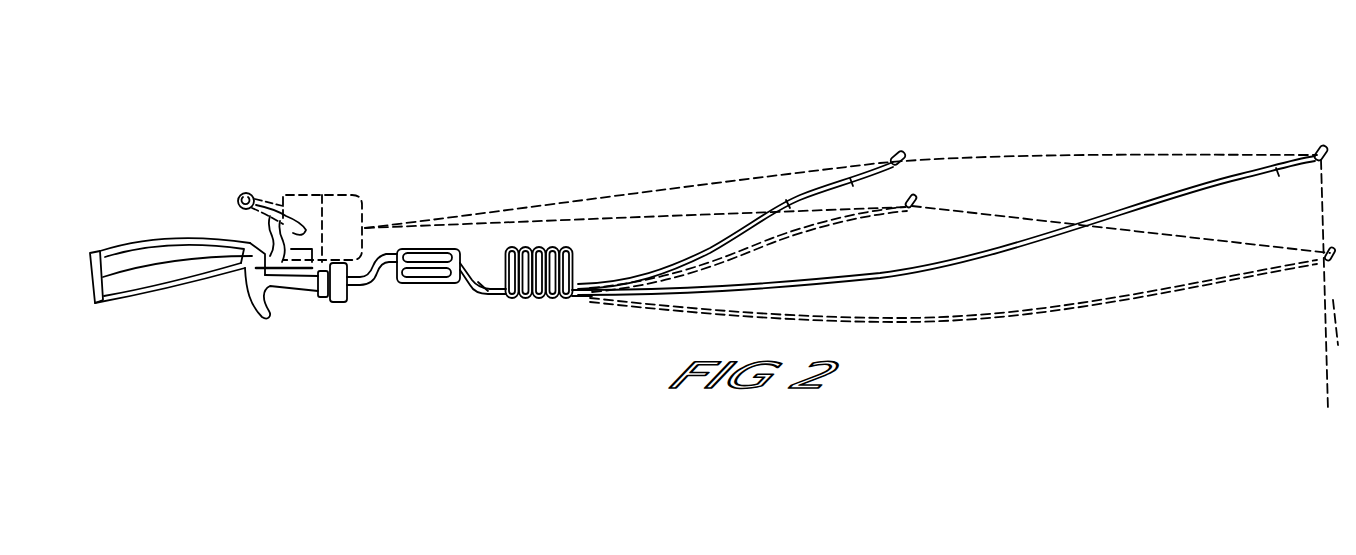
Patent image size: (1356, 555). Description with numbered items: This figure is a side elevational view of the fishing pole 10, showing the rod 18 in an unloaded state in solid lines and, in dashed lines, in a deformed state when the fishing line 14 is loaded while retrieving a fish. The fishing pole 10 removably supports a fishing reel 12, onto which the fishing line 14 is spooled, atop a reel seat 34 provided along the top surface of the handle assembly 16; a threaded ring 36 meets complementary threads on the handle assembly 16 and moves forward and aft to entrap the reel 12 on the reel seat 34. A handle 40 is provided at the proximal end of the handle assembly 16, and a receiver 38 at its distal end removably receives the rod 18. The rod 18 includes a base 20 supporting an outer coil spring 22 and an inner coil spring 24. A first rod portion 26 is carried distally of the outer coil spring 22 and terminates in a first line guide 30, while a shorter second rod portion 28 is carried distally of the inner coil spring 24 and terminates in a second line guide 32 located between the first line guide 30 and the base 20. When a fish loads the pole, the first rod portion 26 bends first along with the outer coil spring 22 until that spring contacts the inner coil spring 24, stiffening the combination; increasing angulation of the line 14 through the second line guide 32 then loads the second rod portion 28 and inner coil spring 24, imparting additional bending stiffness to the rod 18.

The fishing pole 10 is at (246, 110).
The fishing reel 12 is at (300, 186).
The fishing line 14 is at (1322, 212).
The handle assembly 16 is at (290, 321).
The rod 18 is at (977, 282).
The base 20 is at (498, 294).
The outer coil spring 22 is at (564, 256).
The inner coil spring 24 is at (494, 265).
The first rod portion 26 is at (990, 250).
The second rod portion 28 is at (737, 247).
The first line guide 30 is at (1325, 147).
The second line guide 32 is at (902, 150).
The reel seat 34 is at (272, 231).
The threaded ring 36 is at (338, 302).
The receiver 38 is at (439, 285).
The handle 40 is at (160, 236).